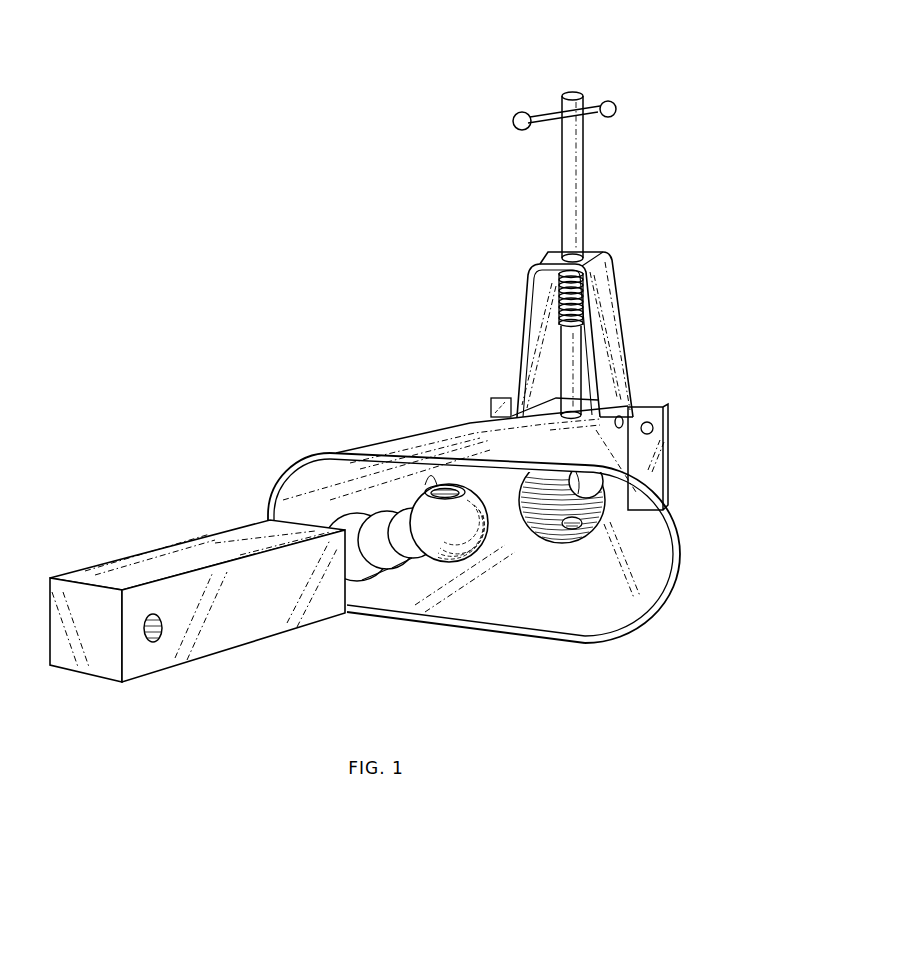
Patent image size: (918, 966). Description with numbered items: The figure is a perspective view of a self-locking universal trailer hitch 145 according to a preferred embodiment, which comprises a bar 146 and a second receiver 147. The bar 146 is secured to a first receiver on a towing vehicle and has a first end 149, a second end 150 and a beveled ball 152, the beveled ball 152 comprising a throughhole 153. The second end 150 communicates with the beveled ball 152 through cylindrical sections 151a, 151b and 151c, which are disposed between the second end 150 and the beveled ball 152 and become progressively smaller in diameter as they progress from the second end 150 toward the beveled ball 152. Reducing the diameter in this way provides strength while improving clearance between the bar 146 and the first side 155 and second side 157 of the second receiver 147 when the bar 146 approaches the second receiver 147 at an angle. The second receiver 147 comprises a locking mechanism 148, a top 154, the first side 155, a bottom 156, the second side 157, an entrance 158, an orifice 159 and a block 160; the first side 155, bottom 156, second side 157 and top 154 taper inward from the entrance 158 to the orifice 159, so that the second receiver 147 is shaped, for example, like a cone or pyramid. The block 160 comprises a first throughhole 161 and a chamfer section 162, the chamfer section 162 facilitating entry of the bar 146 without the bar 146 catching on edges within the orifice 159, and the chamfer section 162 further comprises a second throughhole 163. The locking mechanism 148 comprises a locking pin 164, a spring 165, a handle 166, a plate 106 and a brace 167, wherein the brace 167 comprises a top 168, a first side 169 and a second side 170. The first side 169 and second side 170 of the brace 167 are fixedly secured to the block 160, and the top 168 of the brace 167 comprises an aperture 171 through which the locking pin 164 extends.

The plate 106 is at (648, 415).
The self-locking universal trailer hitch 145 is at (432, 426).
The bar 146 is at (296, 648).
The second receiver 147 is at (480, 543).
The locking mechanism 148 is at (614, 220).
The first end 149 is at (202, 578).
The second end 150 is at (283, 500).
The cylindrical section 151a is at (337, 518).
The cylindrical section 151b is at (362, 515).
The cylindrical section 151c is at (420, 508).
The beveled ball 152 is at (474, 500).
The throughhole 153 is at (426, 558).
The top 154 is at (625, 466).
The first side 155 is at (682, 546).
The bottom 156 is at (597, 643).
The second side 157 is at (478, 440).
The entrance 158 is at (554, 610).
The orifice 159 is at (612, 530).
The block 160 is at (667, 405).
The first throughhole 161 is at (600, 460).
The chamfer section 162 is at (568, 518).
The second throughhole 163 is at (535, 495).
The locking pin 164 is at (573, 388).
The spring 165 is at (583, 307).
The handle 166 is at (538, 115).
The brace 167 is at (623, 320).
The top 168 is at (550, 252).
The first side 169 is at (540, 284).
The second side 170 is at (613, 340).
The aperture 171 is at (563, 235).